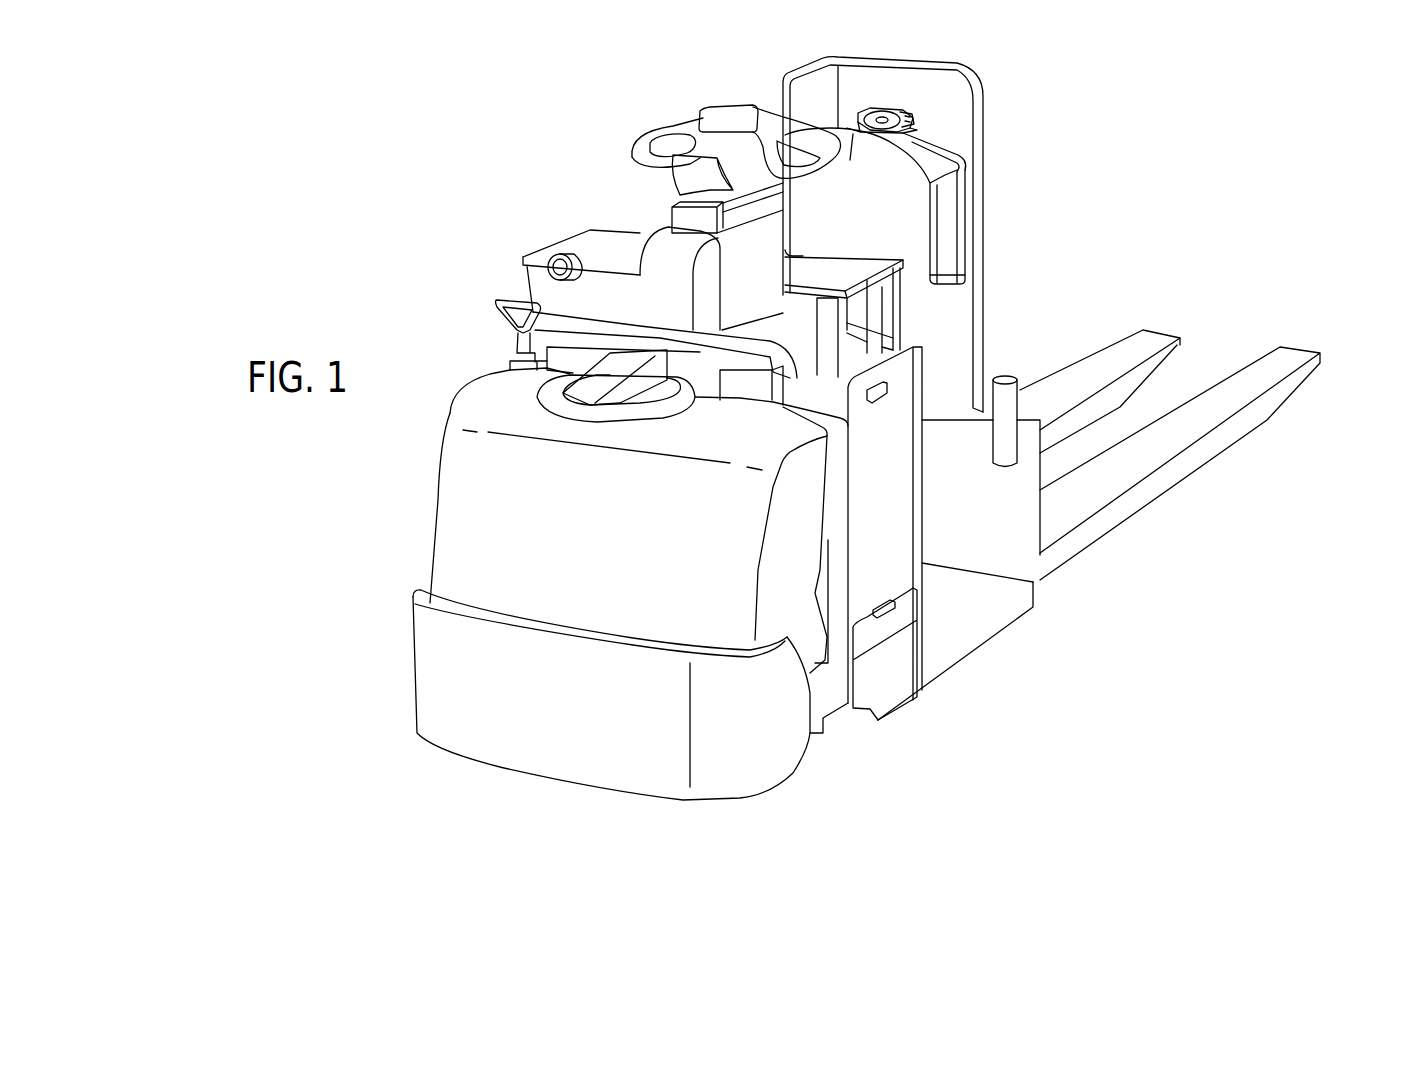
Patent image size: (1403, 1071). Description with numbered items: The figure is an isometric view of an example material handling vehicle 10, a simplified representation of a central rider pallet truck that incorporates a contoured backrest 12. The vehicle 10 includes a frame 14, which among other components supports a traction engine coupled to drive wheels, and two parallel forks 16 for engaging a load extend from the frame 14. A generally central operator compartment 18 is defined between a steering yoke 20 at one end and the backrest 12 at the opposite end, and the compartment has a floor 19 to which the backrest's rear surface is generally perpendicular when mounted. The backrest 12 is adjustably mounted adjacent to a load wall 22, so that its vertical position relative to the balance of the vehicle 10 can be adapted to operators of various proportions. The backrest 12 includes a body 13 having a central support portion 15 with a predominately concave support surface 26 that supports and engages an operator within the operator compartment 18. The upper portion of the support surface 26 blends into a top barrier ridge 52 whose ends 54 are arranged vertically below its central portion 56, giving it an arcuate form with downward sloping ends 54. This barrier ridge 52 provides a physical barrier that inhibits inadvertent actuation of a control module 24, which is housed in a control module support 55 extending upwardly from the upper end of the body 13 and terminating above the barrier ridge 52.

The material handling vehicle 10 is at (1186, 165).
The contoured backrest 12 is at (975, 222).
The body 13 is at (947, 297).
The frame 14 is at (829, 745).
The support portion 15 is at (913, 247).
The forks 16 is at (1153, 338).
The operator compartment 18 is at (991, 517).
The floor 19 is at (963, 605).
The steering yoke 20 is at (642, 138).
The load wall 22 is at (985, 100).
The control module 24 is at (884, 105).
The support surface 26 is at (877, 242).
The top barrier ridge 52 is at (830, 124).
The ends 54 is at (925, 172).
The control module support 55 is at (915, 112).
The central portion 56 is at (857, 140).